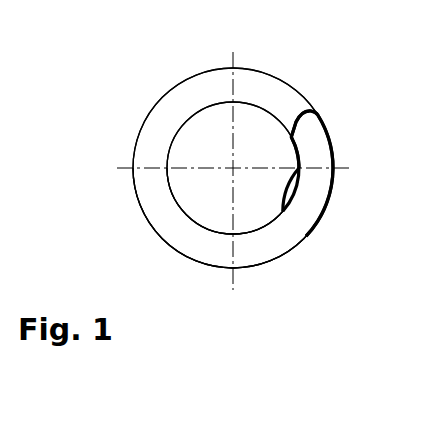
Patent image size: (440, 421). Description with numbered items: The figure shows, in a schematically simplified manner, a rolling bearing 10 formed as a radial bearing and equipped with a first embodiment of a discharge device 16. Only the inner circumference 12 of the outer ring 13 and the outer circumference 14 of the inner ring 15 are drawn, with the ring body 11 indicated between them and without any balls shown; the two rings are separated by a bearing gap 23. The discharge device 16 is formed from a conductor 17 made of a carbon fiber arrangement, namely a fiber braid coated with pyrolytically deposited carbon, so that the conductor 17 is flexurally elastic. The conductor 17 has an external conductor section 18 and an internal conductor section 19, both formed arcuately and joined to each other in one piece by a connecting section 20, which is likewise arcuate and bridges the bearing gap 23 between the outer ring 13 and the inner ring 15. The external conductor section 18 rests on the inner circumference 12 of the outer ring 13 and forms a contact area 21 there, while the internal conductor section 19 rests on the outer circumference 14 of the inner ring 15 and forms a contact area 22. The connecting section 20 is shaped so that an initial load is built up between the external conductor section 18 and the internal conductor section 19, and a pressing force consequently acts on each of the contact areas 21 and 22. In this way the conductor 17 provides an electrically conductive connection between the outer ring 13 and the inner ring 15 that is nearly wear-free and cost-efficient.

The rolling bearing 10 is at (128, 80).
The ring body 11 is at (172, 79).
The inner circumference 12 is at (218, 231).
The outer ring 13 is at (256, 268).
The outer circumference 14 is at (257, 103).
The inner ring 15 is at (220, 103).
The discharge device 16 is at (352, 92).
The conductor 17 is at (326, 130).
The external conductor section 18 is at (332, 205).
The internal conductor section 19 is at (294, 192).
The connecting section 20 is at (311, 110).
The contact area 21 is at (302, 215).
The contact area 22 is at (307, 153).
The bearing gap 23 is at (153, 145).